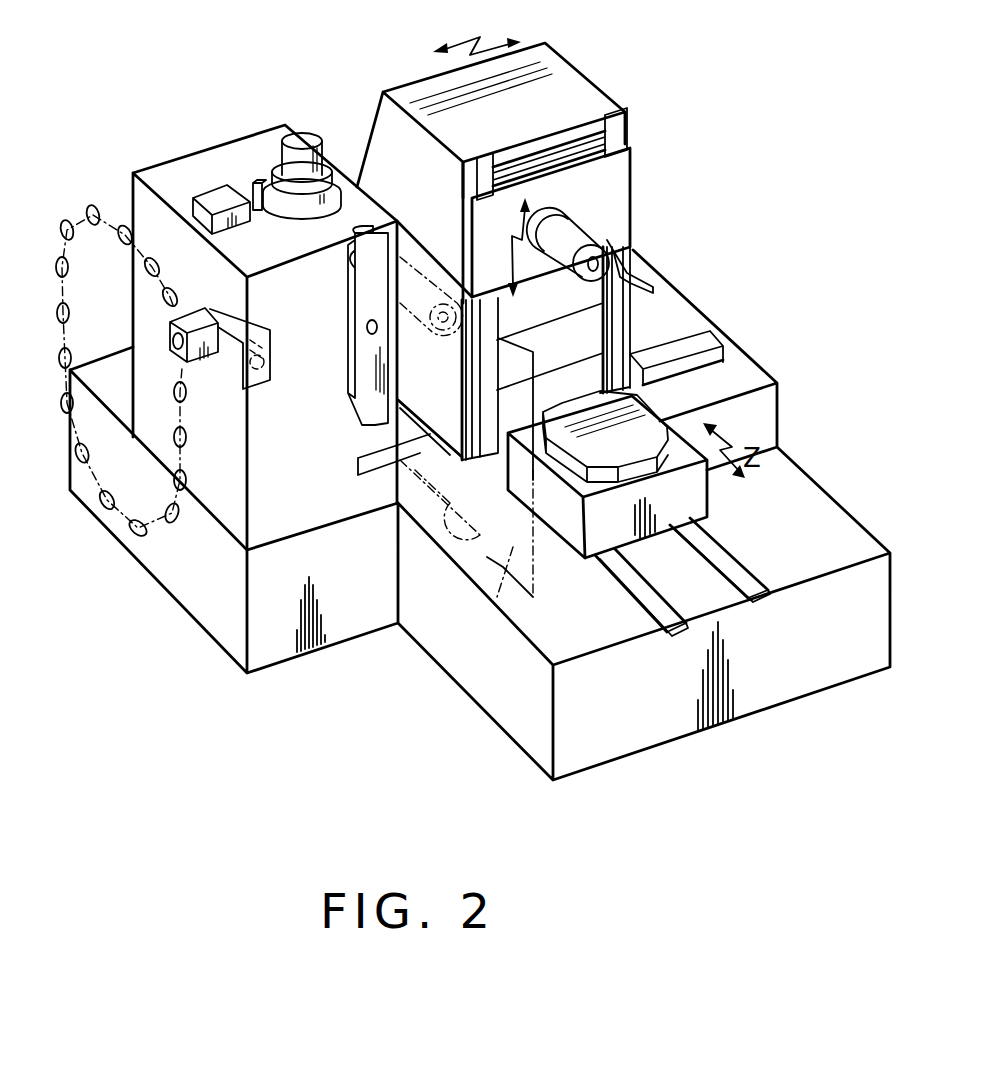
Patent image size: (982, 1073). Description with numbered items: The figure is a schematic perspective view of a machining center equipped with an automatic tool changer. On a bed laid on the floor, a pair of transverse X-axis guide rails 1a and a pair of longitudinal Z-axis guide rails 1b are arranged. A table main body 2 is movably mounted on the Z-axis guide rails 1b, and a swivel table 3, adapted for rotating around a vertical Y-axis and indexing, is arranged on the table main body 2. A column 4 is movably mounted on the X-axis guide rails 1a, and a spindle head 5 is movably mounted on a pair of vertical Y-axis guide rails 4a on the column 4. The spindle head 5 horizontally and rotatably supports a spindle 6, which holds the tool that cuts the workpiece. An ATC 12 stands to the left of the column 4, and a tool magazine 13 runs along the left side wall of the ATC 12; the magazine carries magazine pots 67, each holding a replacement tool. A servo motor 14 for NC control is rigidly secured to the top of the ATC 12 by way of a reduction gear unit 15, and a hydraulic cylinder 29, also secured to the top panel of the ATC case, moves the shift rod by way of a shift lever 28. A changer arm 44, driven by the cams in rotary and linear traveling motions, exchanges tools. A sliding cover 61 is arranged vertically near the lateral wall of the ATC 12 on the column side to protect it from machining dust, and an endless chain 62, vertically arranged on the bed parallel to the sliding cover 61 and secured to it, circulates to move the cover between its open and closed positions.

The X-axis guide rails 1a is at (703, 345).
The Z-axis guide rails 1b is at (740, 568).
The table main body 2 is at (683, 493).
The swivel table 3 is at (630, 413).
The column 4 is at (585, 78).
The Y-axis guide rails 4a is at (637, 273).
The spindle head 5 is at (610, 180).
The spindle 6 is at (610, 212).
The ATC 12 is at (270, 120).
The tool magazine 13 is at (58, 208).
The servo motor 14 is at (300, 135).
The reduction gear unit 15 is at (350, 185).
The shift lever 28 is at (255, 190).
The hydraulic cylinder 29 is at (217, 200).
The changer arm 44 is at (358, 382).
The sliding cover 61 is at (497, 603).
The endless chain 62 is at (437, 546).
The magazine pot 67 is at (213, 363).